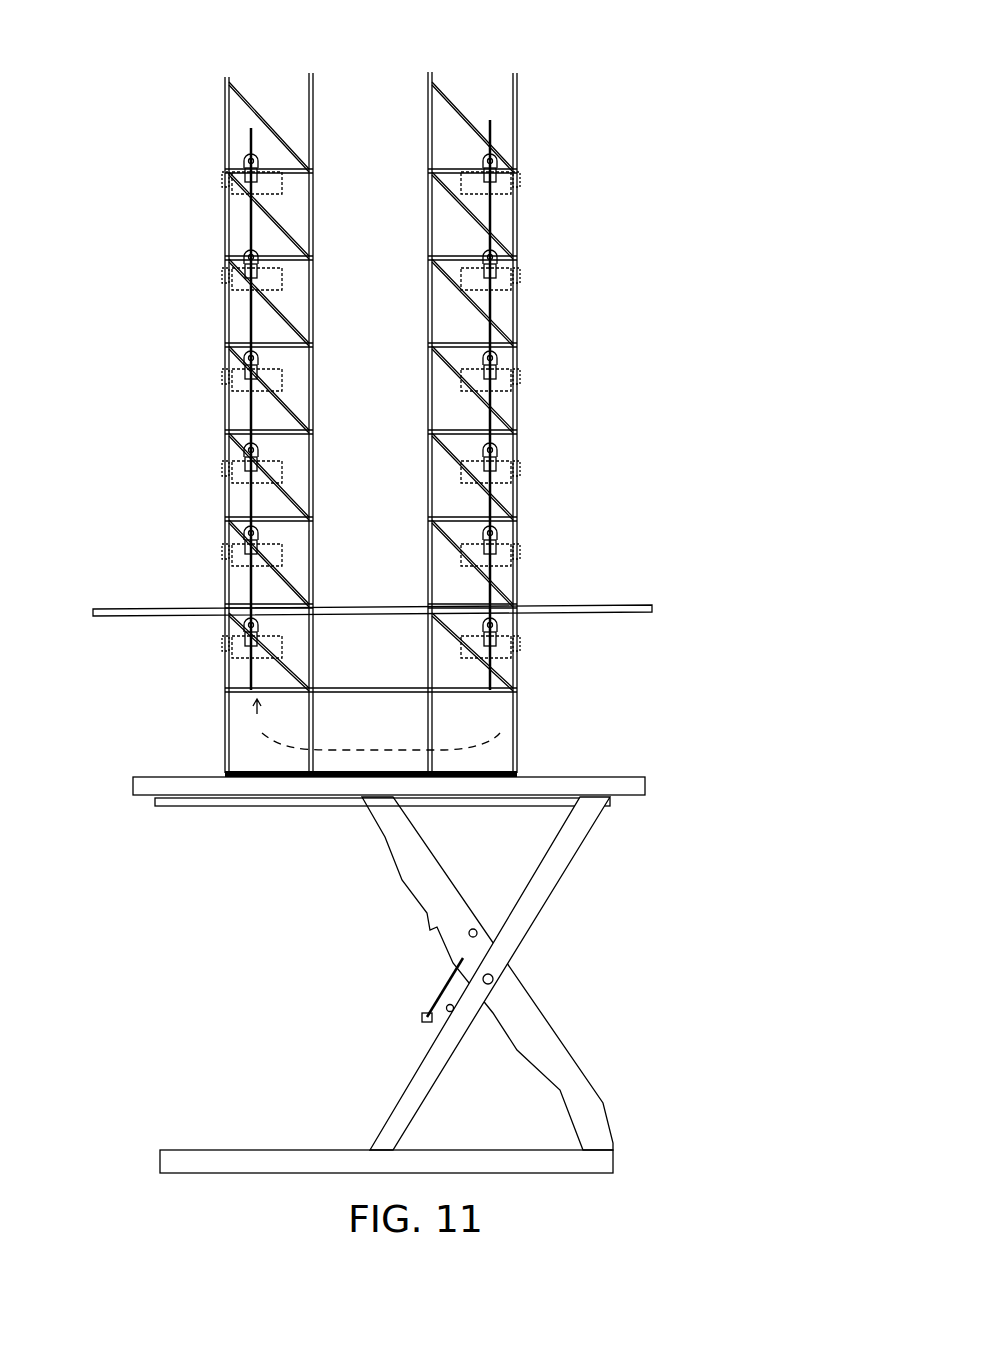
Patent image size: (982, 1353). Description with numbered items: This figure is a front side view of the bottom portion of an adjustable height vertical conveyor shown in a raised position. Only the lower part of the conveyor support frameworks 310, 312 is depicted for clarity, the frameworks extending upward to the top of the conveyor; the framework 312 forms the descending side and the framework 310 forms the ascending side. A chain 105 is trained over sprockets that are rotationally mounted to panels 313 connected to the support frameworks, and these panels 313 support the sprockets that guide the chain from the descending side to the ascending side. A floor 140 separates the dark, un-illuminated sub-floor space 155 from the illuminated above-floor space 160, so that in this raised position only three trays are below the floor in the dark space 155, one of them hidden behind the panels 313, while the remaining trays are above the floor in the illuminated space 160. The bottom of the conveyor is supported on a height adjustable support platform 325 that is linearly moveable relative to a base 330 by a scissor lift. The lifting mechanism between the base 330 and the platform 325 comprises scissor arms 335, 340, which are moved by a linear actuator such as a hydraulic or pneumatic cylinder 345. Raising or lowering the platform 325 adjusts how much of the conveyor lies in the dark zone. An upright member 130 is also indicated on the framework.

The support framework 310 is at (227, 75).
The support framework 312 is at (466, 422).
The chain 105 is at (490, 125).
The above-floor space 160 is at (183, 263).
The upright member 130 is at (520, 368).
The sub-floor space 155 is at (158, 690).
The floor 140 is at (612, 613).
The panels 313 is at (366, 720).
The support platform 325 is at (143, 795).
The scissor arm 340 is at (535, 913).
The scissor arm 335 is at (558, 1060).
The cylinder 345 is at (428, 1017).
The base 330 is at (613, 1160).